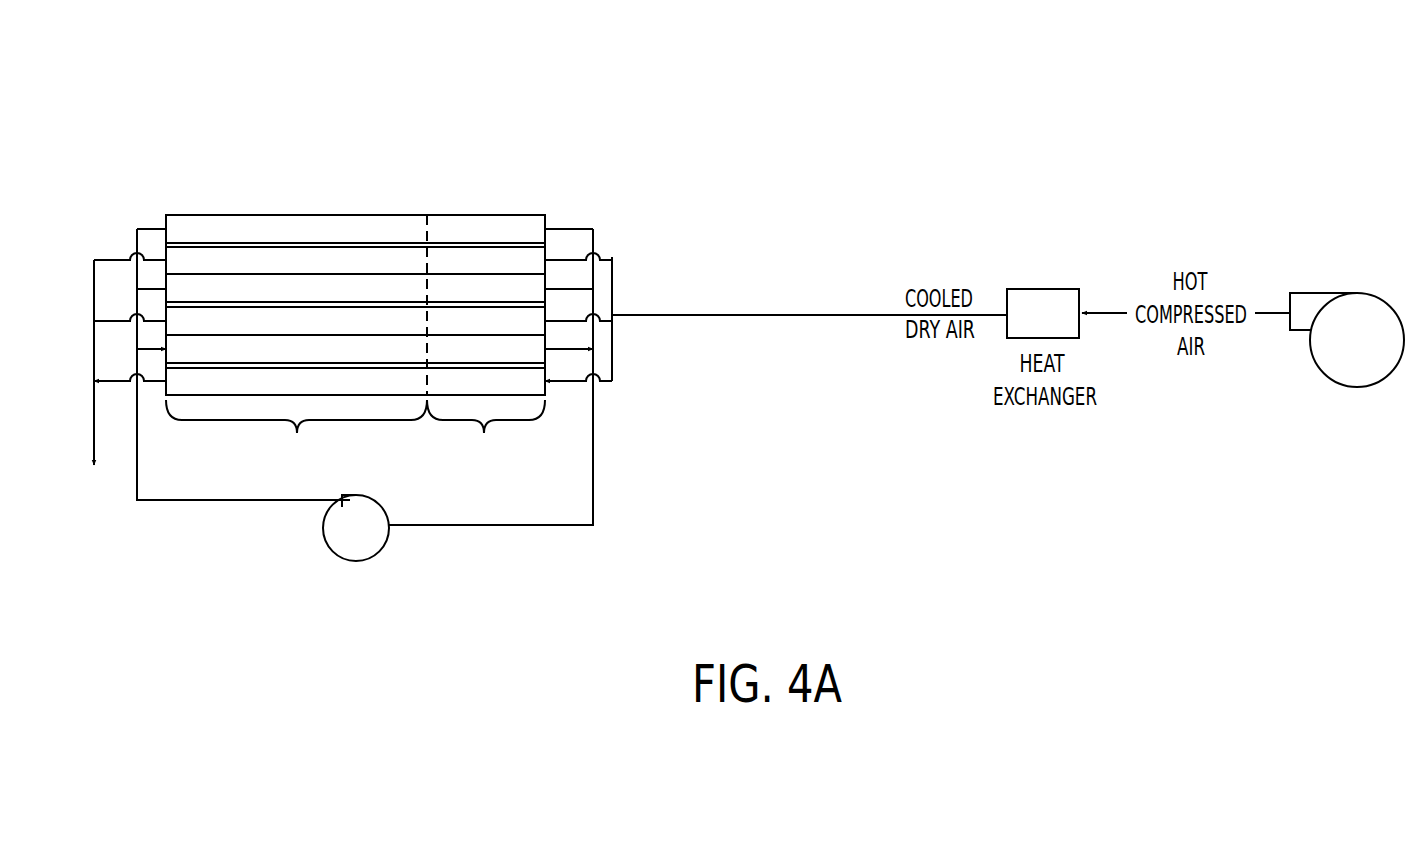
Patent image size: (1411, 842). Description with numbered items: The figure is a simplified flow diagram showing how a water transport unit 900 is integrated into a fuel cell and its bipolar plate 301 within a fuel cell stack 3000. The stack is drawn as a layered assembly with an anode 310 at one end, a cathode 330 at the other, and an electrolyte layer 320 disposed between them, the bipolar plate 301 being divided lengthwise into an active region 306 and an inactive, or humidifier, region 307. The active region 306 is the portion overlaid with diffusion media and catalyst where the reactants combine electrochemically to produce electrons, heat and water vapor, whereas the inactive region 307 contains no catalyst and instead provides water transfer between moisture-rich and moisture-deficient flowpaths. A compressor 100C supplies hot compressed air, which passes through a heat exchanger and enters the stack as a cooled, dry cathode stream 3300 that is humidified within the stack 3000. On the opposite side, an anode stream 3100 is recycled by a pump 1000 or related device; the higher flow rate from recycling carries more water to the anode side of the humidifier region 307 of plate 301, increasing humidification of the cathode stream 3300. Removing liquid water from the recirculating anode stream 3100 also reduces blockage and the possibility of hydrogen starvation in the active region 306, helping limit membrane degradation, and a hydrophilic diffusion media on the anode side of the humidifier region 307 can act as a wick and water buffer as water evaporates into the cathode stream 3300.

The fuel cell stack 3000 is at (234, 155).
The anode 310 is at (183, 216).
The cathode 330 is at (257, 262).
The bipolar plate 301 is at (351, 243).
The electrolyte layer 320 is at (301, 208).
The water transport unit 900 is at (498, 243).
The active region 306 is at (296, 436).
The inactive region 307 is at (486, 436).
The cathode stream 3300 is at (726, 314).
The pump 1000 is at (350, 553).
The anode stream 3100 is at (475, 527).
The compressor 100C is at (1352, 300).